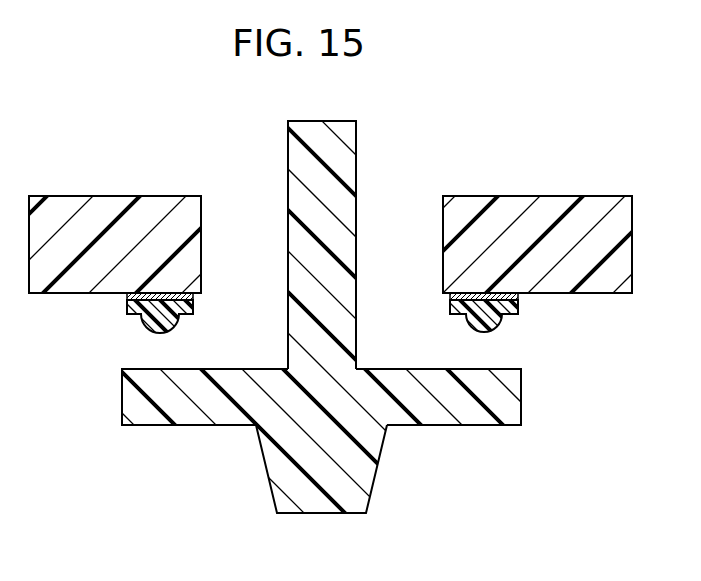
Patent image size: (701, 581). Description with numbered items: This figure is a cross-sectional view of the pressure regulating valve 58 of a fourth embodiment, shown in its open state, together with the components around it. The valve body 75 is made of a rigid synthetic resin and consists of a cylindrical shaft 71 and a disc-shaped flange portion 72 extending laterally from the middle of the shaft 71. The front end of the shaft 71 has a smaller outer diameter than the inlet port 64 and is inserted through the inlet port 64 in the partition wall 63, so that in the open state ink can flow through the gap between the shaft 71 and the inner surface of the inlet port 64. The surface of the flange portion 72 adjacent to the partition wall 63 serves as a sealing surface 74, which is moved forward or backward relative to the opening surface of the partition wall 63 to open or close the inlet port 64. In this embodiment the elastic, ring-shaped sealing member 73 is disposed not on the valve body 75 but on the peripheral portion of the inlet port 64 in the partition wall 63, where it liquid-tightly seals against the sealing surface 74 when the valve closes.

The pressure regulating valve 58 is at (105, 448).
The partition wall 63 is at (518, 196).
The inlet port 64 is at (230, 220).
The shaft 71 is at (348, 163).
The flange portion 72 is at (433, 418).
The sealing member 73 is at (127, 307).
The sealing surface 74 is at (228, 370).
The valve body 75 is at (495, 442).